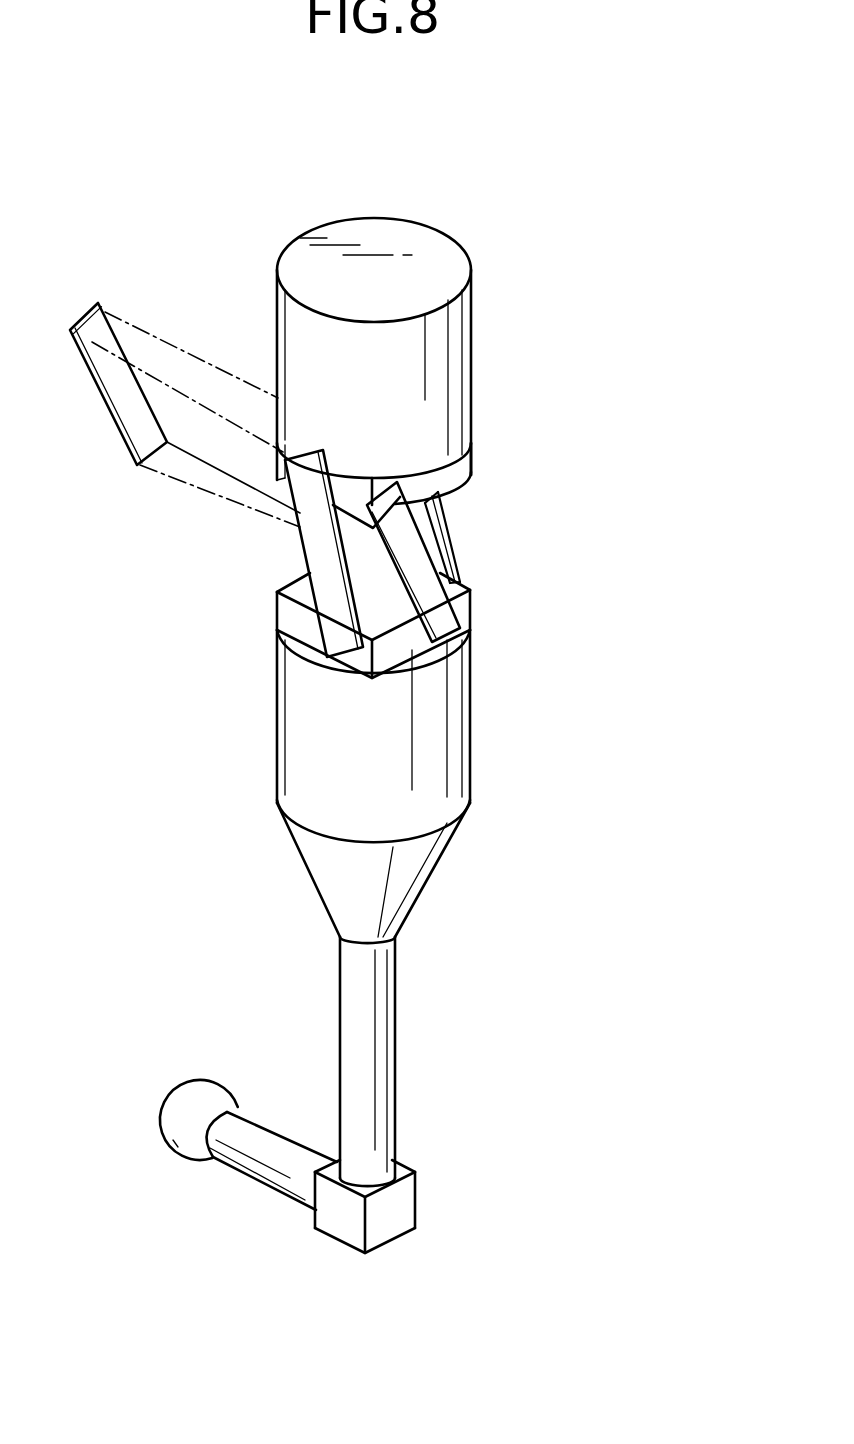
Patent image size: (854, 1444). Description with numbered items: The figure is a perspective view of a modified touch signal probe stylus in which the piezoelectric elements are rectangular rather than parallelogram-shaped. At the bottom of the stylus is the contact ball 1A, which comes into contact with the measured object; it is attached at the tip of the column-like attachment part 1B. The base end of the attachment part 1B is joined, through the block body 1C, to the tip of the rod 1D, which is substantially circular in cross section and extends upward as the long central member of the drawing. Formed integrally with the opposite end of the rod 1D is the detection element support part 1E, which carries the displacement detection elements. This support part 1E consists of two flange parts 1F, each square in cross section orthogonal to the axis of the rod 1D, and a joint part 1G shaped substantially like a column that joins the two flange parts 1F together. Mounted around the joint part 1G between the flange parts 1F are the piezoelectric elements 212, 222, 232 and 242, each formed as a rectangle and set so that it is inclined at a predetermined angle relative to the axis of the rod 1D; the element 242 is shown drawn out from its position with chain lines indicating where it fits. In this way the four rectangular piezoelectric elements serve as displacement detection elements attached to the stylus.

The contact ball 1A is at (167, 1115).
The attachment part 1B is at (263, 1190).
The block body 1C is at (383, 1232).
The rod 1D is at (382, 1063).
The detection element support part 1E is at (350, 560).
The flange part 1F is at (458, 463).
The joint part 1G is at (373, 568).
The piezoelectric element 212 is at (315, 522).
The piezoelectric element 222 is at (440, 610).
The piezoelectric element 232 is at (448, 521).
The piezoelectric element 242 is at (128, 403).